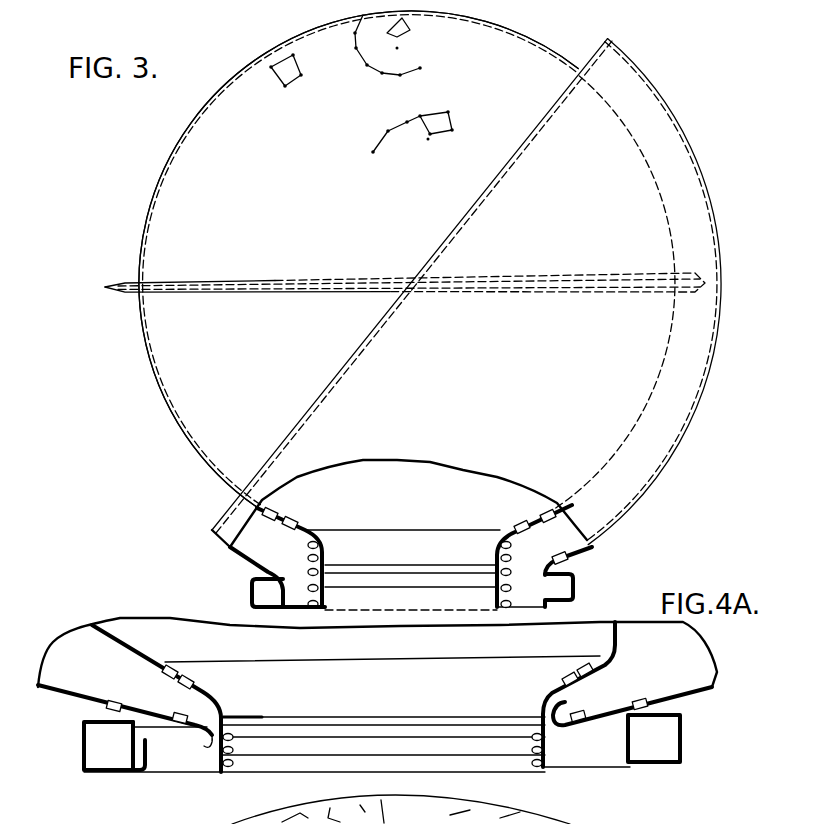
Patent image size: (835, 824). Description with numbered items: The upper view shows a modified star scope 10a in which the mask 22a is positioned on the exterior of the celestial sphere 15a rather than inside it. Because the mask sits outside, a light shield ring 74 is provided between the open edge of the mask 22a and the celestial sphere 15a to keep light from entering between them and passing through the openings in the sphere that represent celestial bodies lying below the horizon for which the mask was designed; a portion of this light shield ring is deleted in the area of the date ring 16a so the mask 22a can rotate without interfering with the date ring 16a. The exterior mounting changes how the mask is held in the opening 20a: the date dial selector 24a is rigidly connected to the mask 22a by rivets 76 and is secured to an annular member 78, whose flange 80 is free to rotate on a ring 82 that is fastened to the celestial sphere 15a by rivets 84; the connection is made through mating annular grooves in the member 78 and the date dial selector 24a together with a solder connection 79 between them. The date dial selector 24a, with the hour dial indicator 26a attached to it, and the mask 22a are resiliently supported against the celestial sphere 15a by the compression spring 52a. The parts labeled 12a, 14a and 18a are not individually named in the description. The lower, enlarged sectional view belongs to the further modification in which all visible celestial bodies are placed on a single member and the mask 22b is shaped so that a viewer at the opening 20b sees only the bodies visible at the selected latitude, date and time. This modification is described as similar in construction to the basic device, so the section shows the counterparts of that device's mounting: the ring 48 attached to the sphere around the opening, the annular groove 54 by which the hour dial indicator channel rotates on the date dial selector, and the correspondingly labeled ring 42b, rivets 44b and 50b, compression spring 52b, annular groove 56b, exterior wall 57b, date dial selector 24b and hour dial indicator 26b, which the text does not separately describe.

In FIG. 3, the modified star scope 10a is at (142, 370).
In FIG. 3, the transparent globe shell 12a is at (535, 62).
In FIG. 3, the inner liner of globe 14a is at (200, 458).
In FIG. 3, the celestial sphere 15a is at (683, 218).
In FIG. 3, the date ring 16a is at (120, 283).
In FIG. 3, the constellation figures 18a is at (452, 118).
In FIG. 3, the mask 22a is at (658, 480).
In FIG. 3, the light shield ring 74 is at (520, 150).
In FIG. 3, the rivets 76 is at (580, 549).
In FIG. 3, the annular member 78 is at (392, 527).
In FIG. 3, the solder connection 79 is at (497, 584).
In FIG. 3, the flange 80 is at (503, 534).
In FIG. 3, the ring 82 is at (425, 574).
In FIG. 3, the rivets 84 is at (540, 530).
In FIG. 3, the hour dial indicator 26a is at (575, 589).
In FIG. 3, the compression spring 52a is at (300, 609).
In FIG. 3, the opening 20a is at (338, 580).
In FIG. 3, the date dial selector 24a is at (513, 606).
In FIG. 4A, the mask 22b is at (148, 641).
In FIG. 4A, the lower shell wall 50b is at (117, 702).
In FIG. 4A, the lower shell hook 42b is at (555, 712).
In FIG. 4A, the top plate 44b is at (596, 670).
In FIG. 4A, the left bracket 26b is at (82, 747).
In FIG. 4A, the annular groove 54 is at (130, 750).
In FIG. 4A, the ring 48 is at (197, 732).
In FIG. 4A, the bottom plate 24b is at (148, 775).
In FIG. 4A, the bracket corner 56b is at (138, 776).
In FIG. 4A, the opening 20b is at (317, 763).
In FIG. 4A, the ring bottom 52b is at (572, 768).
In FIG. 4A, the right bracket 57b is at (633, 765).